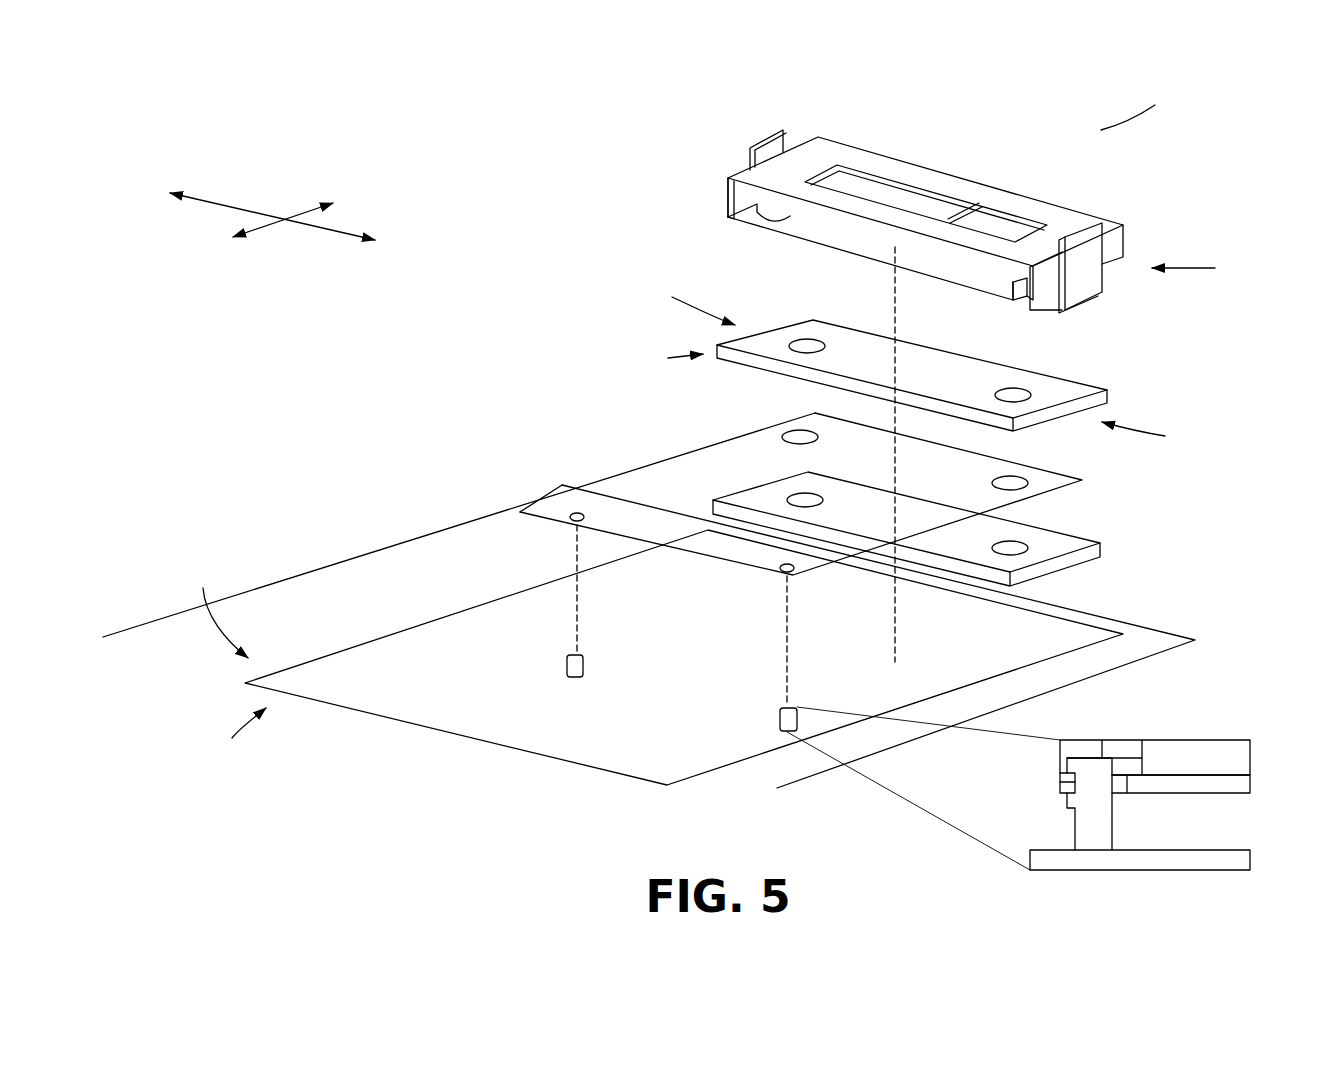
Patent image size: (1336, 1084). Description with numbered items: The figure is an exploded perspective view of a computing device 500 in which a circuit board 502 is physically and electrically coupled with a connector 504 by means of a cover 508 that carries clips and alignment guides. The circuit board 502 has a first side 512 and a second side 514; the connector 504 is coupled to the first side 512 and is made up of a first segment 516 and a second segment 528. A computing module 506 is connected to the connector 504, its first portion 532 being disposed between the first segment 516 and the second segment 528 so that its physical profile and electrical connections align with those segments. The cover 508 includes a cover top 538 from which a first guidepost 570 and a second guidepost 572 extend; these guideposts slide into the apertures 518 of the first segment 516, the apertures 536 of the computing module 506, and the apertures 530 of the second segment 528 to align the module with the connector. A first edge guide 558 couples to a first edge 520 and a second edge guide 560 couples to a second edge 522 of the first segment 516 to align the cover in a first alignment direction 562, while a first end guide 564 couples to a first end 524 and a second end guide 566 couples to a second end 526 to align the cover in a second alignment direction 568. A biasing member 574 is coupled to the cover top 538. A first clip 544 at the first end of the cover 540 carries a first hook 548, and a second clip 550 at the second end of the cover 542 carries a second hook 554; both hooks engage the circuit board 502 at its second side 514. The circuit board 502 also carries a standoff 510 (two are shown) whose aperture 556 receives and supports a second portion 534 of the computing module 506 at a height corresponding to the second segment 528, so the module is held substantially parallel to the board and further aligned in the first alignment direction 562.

The computing device 500 is at (134, 628).
The circuit board 502 is at (436, 617).
The connector 504 is at (697, 487).
The computing module 506 is at (652, 466).
The cover 508 is at (1141, 104).
The standoff 510 is at (783, 732).
The first side of the circuit board 512 is at (215, 608).
The second side of the circuit board 514 is at (229, 735).
The first segment 516 is at (1110, 396).
The apertures 518 is at (825, 346).
The first edge 520 is at (805, 310).
The second edge 522 is at (666, 358).
The first end 524 is at (684, 297).
The second end 526 is at (1153, 438).
The second segment 528 is at (1073, 572).
The apertures 530 is at (822, 500).
The first portion 532 is at (785, 413).
The second portion 534 is at (548, 492).
The apertures 536 is at (822, 435).
The cover top 538 is at (1010, 198).
The first end of the cover 540 is at (697, 160).
The second end of the cover 542 is at (1200, 267).
The first clip 544 is at (748, 151).
The first hook 548 is at (730, 217).
The second clip 550 is at (1088, 253).
The second hook 554 is at (1084, 306).
The aperture 556 is at (1060, 785).
The first edge guide 558 is at (854, 143).
The second edge guide 560 is at (823, 213).
The first alignment direction 562 is at (306, 204).
The first end guide 564 is at (727, 190).
The second end guide 566 is at (1050, 292).
The second alignment direction 568 is at (249, 205).
The first guidepost 570 is at (792, 217).
The second guidepost 572 is at (1013, 278).
The biasing member 574 is at (927, 205).